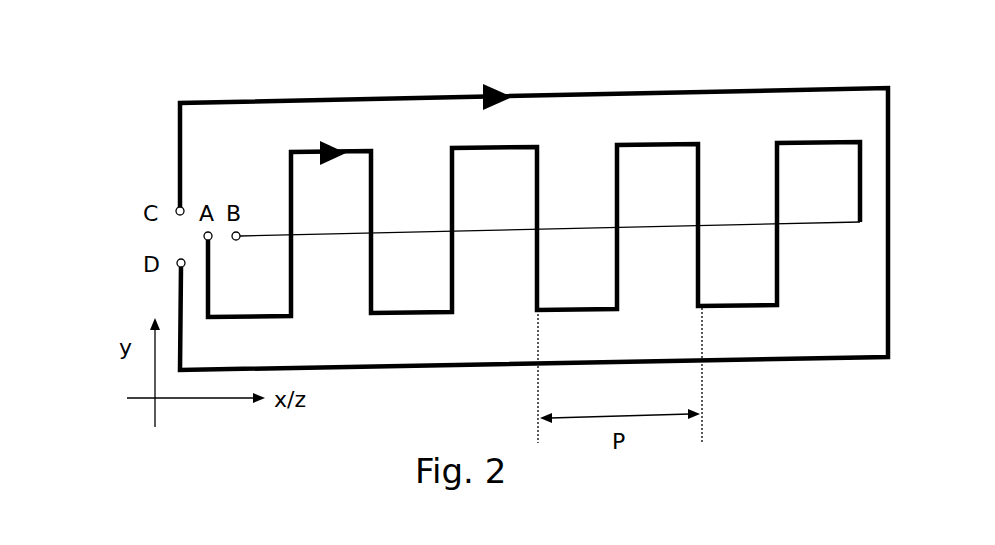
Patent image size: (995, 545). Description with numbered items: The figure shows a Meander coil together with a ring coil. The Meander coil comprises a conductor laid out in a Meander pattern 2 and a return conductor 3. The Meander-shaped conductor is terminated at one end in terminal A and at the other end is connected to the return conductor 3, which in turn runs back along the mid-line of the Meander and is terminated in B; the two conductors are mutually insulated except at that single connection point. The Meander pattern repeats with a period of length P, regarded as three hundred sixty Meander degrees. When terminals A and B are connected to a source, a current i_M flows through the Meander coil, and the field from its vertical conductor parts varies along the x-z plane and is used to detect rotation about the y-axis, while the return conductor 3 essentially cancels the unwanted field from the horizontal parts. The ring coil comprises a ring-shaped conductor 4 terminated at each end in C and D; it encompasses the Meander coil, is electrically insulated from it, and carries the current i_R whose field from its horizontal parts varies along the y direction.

The conductor in a Meander pattern 2 is at (566, 312).
The return conductor 3 is at (808, 225).
The ring-shaped conductor 4 is at (622, 92).